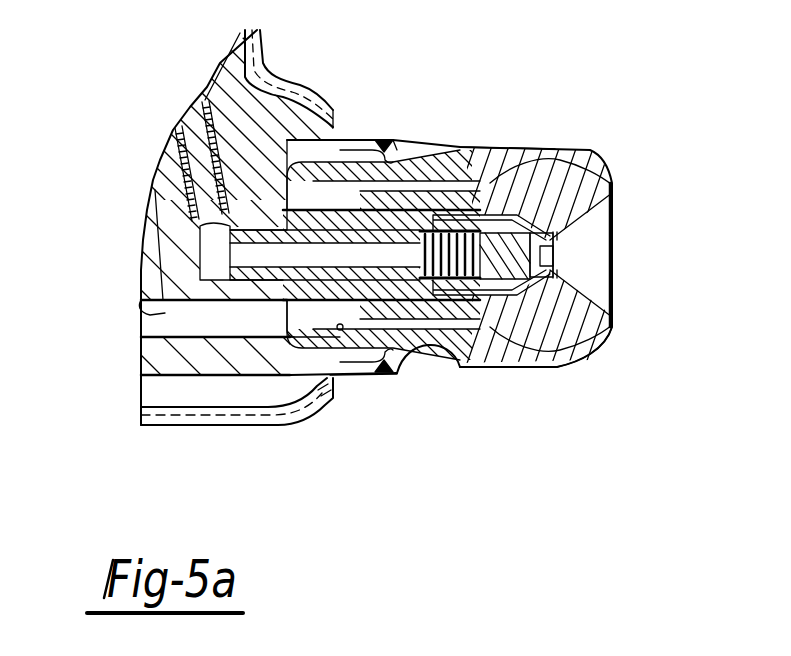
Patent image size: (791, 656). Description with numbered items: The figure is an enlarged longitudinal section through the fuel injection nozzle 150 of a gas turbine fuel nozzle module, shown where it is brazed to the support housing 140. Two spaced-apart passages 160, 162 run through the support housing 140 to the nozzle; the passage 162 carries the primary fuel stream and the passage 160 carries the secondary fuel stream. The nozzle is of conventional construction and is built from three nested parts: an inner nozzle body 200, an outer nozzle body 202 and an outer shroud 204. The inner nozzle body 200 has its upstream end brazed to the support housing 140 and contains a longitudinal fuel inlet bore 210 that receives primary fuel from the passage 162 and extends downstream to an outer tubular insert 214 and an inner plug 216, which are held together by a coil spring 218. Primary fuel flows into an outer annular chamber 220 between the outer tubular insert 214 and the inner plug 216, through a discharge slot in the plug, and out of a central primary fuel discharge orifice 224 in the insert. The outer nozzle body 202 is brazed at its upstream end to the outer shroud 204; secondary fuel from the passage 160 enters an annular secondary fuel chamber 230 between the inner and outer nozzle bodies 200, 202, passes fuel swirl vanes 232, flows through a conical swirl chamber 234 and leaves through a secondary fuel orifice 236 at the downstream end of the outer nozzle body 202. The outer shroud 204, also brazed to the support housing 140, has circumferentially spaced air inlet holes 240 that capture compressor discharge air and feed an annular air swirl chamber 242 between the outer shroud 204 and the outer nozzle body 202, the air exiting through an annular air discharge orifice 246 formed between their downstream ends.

The support housing 140 is at (180, 358).
The fuel injection nozzle 150 is at (495, 128).
The passage 160 is at (147, 312).
The passage 162 is at (258, 30).
The inner nozzle body 200 is at (323, 388).
The outer nozzle body 202 is at (397, 138).
The outer shroud 204 is at (568, 150).
The longitudinal fuel inlet bore 210 is at (245, 253).
The outer tubular insert 214 is at (483, 370).
The inner plug 216 is at (600, 186).
The coil spring 218 is at (357, 374).
The outer annular chamber 220 is at (557, 368).
The central primary fuel discharge orifice 224 is at (548, 256).
The annular secondary fuel chamber 230 is at (340, 210).
The fuel swirl vanes 232 is at (520, 368).
The conical swirl chamber 234 is at (520, 235).
The secondary fuel orifice 236 is at (600, 240).
The air inlet holes 240 is at (425, 163).
The annular air swirl chamber 242 is at (605, 180).
The annular air discharge orifice 246 is at (605, 328).